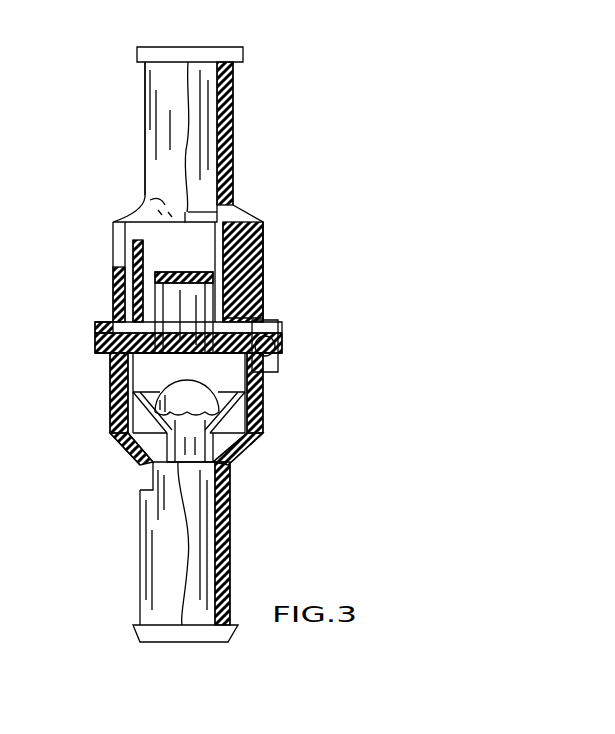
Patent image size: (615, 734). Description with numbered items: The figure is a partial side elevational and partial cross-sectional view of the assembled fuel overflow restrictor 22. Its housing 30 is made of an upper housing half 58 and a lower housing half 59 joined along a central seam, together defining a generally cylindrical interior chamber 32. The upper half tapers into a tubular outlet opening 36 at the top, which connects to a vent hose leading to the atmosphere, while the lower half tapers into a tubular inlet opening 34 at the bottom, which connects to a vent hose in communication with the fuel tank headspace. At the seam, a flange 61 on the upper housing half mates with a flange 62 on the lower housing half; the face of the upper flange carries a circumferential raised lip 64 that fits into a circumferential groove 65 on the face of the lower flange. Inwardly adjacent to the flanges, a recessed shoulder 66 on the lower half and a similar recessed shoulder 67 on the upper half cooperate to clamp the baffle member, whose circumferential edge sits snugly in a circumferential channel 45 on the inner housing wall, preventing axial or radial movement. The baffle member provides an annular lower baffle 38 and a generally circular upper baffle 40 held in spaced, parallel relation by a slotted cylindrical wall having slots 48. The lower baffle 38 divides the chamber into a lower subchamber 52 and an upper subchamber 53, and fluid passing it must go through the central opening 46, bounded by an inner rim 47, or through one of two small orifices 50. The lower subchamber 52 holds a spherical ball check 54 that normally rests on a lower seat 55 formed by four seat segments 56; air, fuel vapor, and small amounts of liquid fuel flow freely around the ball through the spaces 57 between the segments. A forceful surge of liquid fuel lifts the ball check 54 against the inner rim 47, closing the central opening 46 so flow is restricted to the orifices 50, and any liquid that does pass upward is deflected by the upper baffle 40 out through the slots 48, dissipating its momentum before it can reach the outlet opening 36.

The fuel overflow restrictor 22 is at (298, 286).
The housing 30 is at (90, 344).
The interior chamber 32 is at (265, 417).
The inlet opening 34 is at (197, 628).
The outlet opening 36 is at (202, 104).
The lower baffle 38 is at (265, 380).
The upper baffle 40 is at (263, 236).
The circumferential channel 45 is at (112, 388).
The central opening 46 is at (150, 200).
The inner rim 47 is at (220, 383).
The slots 48 is at (133, 245).
The orifices 50 is at (150, 320).
The lower subchamber 52 is at (133, 443).
The upper subchamber 53 is at (233, 207).
The ball check 54 is at (215, 455).
The lower seat 55 is at (136, 466).
The seat segments 56 is at (264, 437).
The spaces 57 is at (152, 525).
The upper housing half 58 is at (136, 199).
The lower housing half 59 is at (262, 462).
The flange 61 is at (92, 328).
The flange 62 is at (100, 362).
The circumferential raised lip 64 is at (100, 352).
The circumferential groove 65 is at (98, 372).
The recessed shoulder 66 is at (273, 362).
The recessed shoulder 67 is at (264, 319).